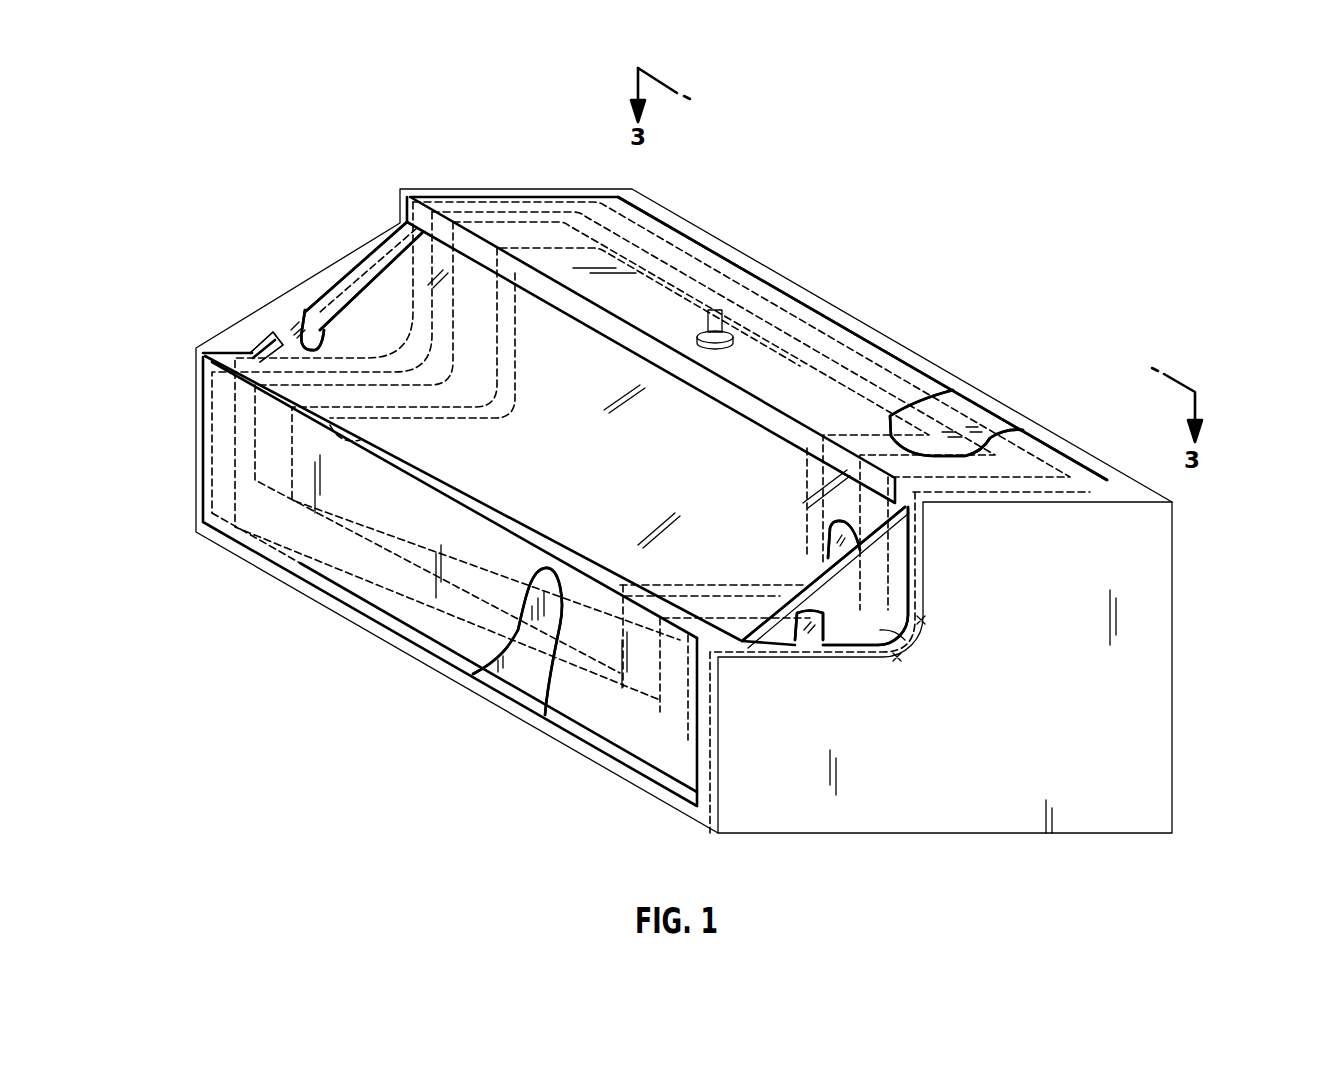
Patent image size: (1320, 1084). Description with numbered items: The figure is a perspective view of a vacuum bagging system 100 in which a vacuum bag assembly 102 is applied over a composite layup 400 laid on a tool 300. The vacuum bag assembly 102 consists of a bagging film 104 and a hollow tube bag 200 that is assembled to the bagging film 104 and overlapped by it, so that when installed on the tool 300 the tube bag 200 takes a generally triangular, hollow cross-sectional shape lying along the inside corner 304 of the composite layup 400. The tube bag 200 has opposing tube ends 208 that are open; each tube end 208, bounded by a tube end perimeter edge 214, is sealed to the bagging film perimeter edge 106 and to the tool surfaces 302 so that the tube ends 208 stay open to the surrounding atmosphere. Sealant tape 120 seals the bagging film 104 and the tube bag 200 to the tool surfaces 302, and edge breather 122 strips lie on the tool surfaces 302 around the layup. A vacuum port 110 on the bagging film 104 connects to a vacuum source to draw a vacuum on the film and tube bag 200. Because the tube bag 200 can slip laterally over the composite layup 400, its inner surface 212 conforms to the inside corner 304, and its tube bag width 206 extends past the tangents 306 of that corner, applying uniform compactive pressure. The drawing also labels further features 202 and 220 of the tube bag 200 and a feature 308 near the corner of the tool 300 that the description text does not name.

The vacuum bagging system 100 is at (480, 192).
The vacuum bag assembly 102 is at (396, 218).
The bagging film 104 is at (385, 583).
The bagging film perimeter edge 106 is at (815, 306).
The vacuum port 110 is at (715, 308).
The sealant tape 120 is at (287, 326).
The edge breather 122 is at (912, 420).
The hollow tube bag 200 is at (915, 596).
The cover clip 202 is at (778, 634).
The tube bag width 206 is at (832, 633).
The tube ends 208 is at (328, 272).
The inner surface 212 is at (897, 520).
The tube end perimeter edge 214 is at (300, 306).
The cover edge 220 is at (898, 540).
The tool 300 is at (1184, 500).
The tool surfaces 302 is at (1097, 470).
The inside corner 304 is at (912, 652).
The tangents 306 is at (922, 620).
The housing corner edge 308 is at (897, 657).
The composite layup 400 is at (340, 438).